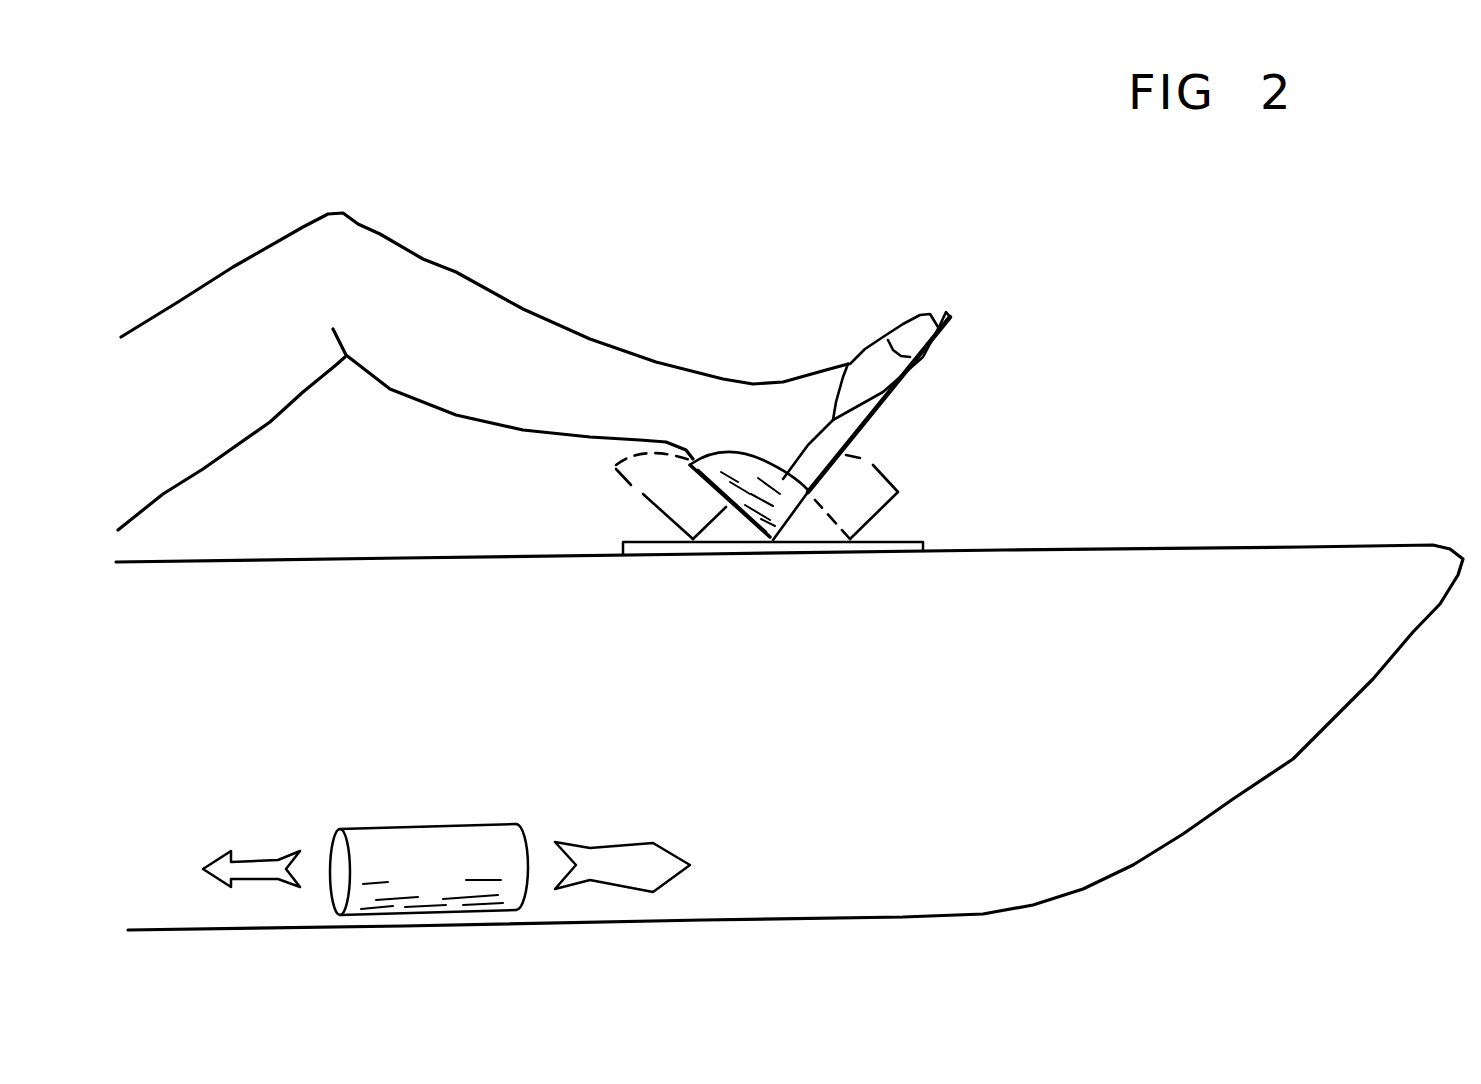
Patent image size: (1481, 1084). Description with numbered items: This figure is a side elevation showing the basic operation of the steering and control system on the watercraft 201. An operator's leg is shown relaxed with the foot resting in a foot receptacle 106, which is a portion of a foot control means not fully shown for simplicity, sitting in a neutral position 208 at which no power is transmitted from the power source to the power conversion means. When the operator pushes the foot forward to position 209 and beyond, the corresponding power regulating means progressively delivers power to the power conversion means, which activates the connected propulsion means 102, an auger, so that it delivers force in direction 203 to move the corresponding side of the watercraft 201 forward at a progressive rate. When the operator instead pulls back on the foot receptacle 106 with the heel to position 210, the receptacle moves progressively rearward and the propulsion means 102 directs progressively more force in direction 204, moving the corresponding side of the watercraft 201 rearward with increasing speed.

The propulsion means 102 is at (429, 869).
The foot receptacle 106 is at (830, 402).
The watercraft 201 is at (789, 737).
The direction 203 is at (251, 869).
The direction 204 is at (622, 867).
The neutral position 208 is at (749, 518).
The forward position 209 is at (856, 520).
The rearward position 210 is at (671, 520).